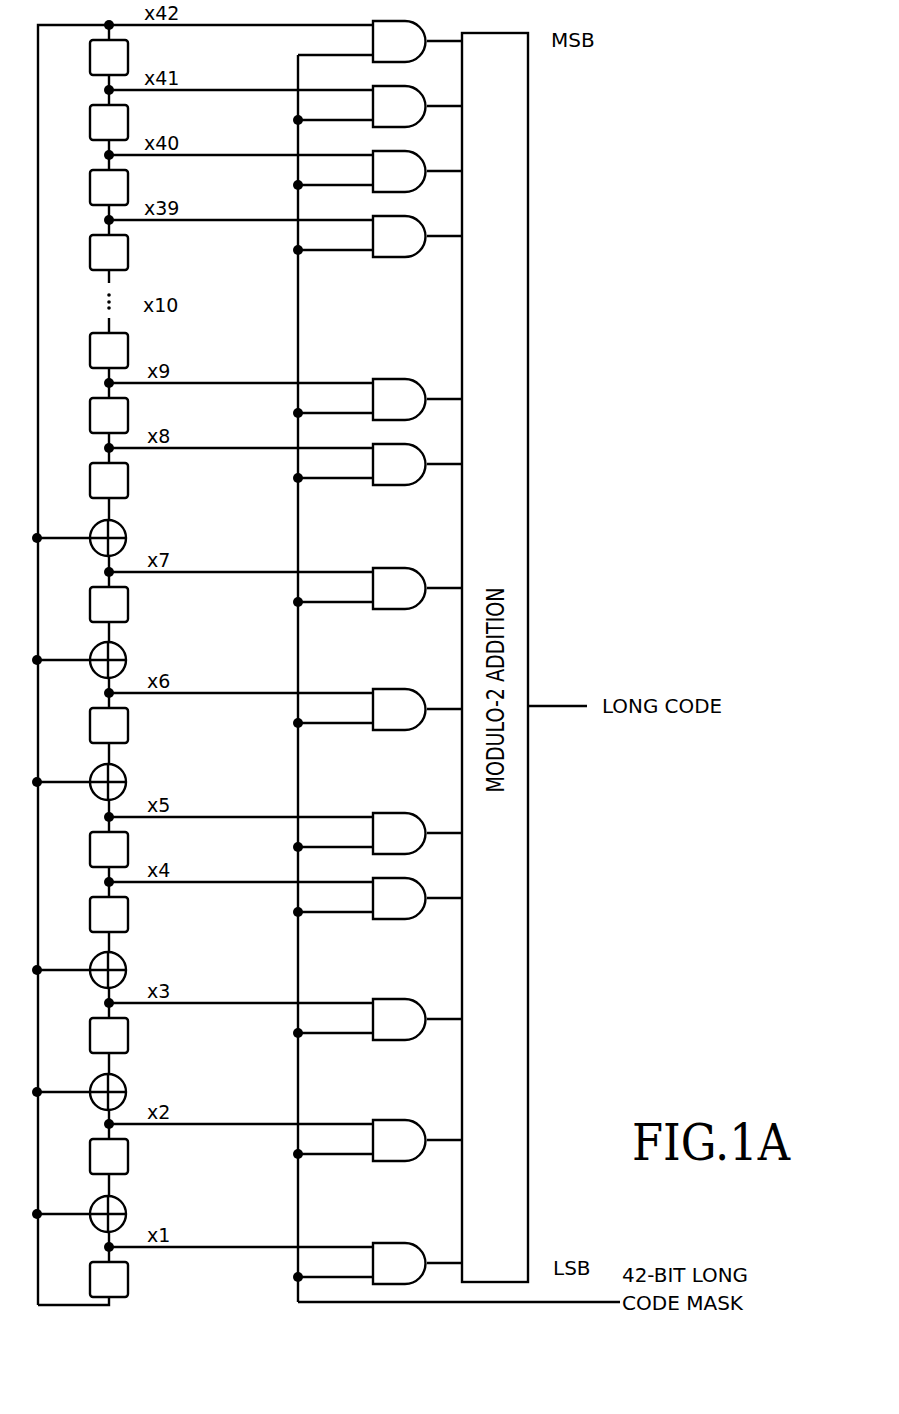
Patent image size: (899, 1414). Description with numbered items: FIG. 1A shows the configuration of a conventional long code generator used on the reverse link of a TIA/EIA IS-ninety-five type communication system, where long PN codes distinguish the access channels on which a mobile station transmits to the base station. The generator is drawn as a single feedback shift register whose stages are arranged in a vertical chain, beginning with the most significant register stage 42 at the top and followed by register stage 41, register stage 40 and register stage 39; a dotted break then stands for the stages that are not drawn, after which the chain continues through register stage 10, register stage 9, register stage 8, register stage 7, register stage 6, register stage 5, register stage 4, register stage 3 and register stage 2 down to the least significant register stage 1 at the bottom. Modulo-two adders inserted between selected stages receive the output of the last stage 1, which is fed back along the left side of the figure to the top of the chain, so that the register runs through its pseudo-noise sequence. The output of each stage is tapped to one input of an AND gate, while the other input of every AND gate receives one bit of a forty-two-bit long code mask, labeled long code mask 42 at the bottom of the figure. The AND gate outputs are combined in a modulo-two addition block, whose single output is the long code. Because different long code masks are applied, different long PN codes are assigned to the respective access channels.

The 42-bit long code mask / shift register stage 42 is at (562, 1311).
The shift register stage 41 is at (109, 122).
The shift register stage 40 is at (109, 187).
The shift register stage 39 is at (109, 252).
The shift register stage 10 is at (109, 350).
The shift register stage 9 is at (109, 415).
The shift register stage 8 is at (109, 480).
The shift register stage 7 is at (109, 604).
The shift register stage 6 is at (109, 725).
The shift register stage 5 is at (109, 849).
The shift register stage 4 is at (109, 914).
The shift register stage 3 is at (109, 1035).
The shift register stage 2 is at (109, 1156).
The shift register stage 1 is at (109, 1279).